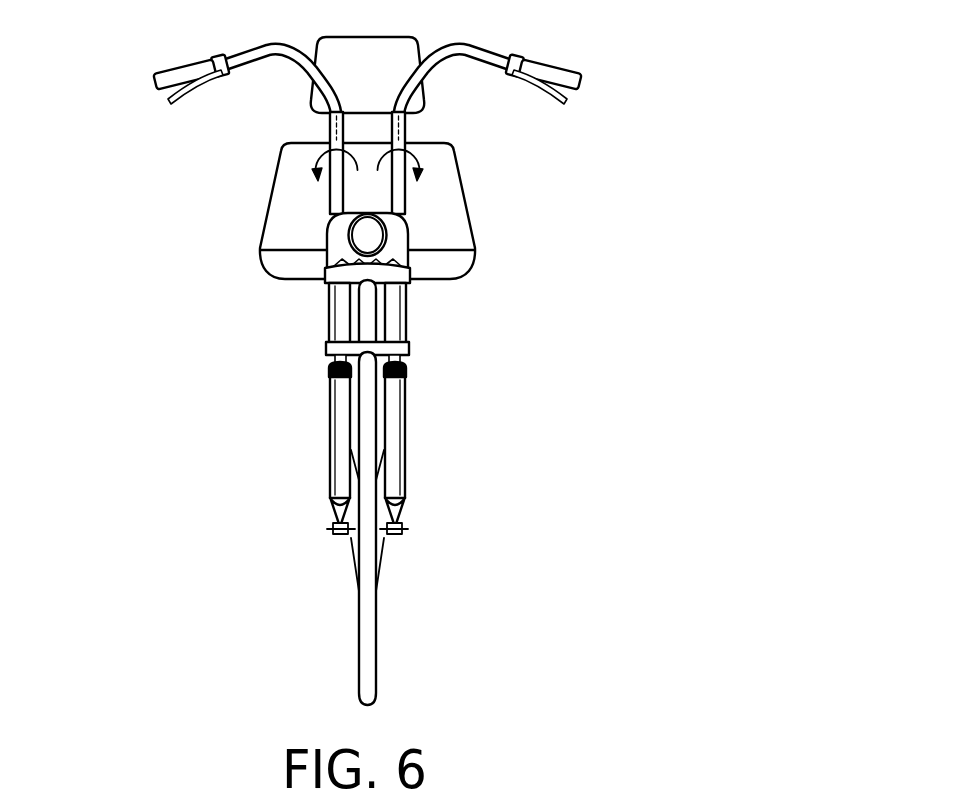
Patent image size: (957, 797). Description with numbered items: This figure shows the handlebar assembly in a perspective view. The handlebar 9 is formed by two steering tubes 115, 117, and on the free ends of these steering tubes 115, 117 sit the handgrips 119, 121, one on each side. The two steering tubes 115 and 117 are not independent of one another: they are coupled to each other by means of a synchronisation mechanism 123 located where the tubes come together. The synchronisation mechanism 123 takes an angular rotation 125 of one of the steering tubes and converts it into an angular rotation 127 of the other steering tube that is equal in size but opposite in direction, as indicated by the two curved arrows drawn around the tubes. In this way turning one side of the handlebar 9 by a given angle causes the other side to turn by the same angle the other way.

The handlebar 9 is at (503, 50).
The handgrip 119 is at (173, 72).
The handgrip 121 is at (563, 72).
The steering tube 115 is at (340, 192).
The steering tube 117 is at (396, 192).
The synchronisation mechanism 123 is at (413, 226).
The angular rotation 125 is at (317, 156).
The angular rotation 127 is at (418, 157).